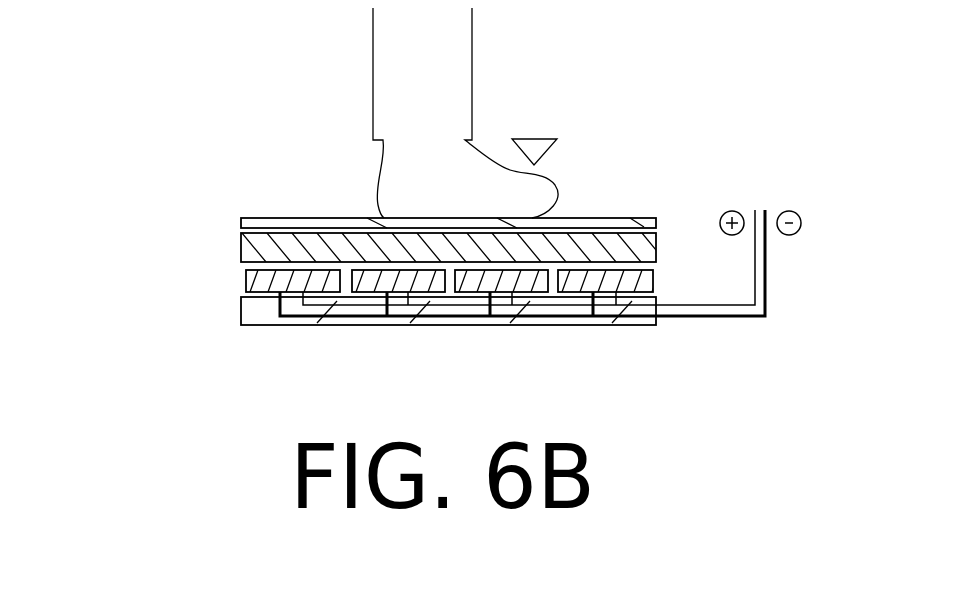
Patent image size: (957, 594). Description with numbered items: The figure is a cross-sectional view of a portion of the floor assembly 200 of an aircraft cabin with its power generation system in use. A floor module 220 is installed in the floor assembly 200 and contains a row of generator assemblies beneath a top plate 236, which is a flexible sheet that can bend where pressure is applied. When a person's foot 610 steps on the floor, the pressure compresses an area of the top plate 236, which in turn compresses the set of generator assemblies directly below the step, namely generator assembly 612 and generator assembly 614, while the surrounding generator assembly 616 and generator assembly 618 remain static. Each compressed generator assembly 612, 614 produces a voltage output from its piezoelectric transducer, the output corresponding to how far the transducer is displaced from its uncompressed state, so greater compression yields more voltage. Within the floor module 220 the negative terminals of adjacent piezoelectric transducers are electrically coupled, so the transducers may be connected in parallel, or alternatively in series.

The floor assembly 200 is at (229, 172).
The person's foot 610 is at (396, 198).
The top plate 236 is at (273, 244).
The floor module 220 is at (429, 303).
The generator assembly 612 is at (377, 283).
The generator assembly 614 is at (477, 283).
The generator assembly 616 is at (277, 283).
The generator assembly 618 is at (590, 283).